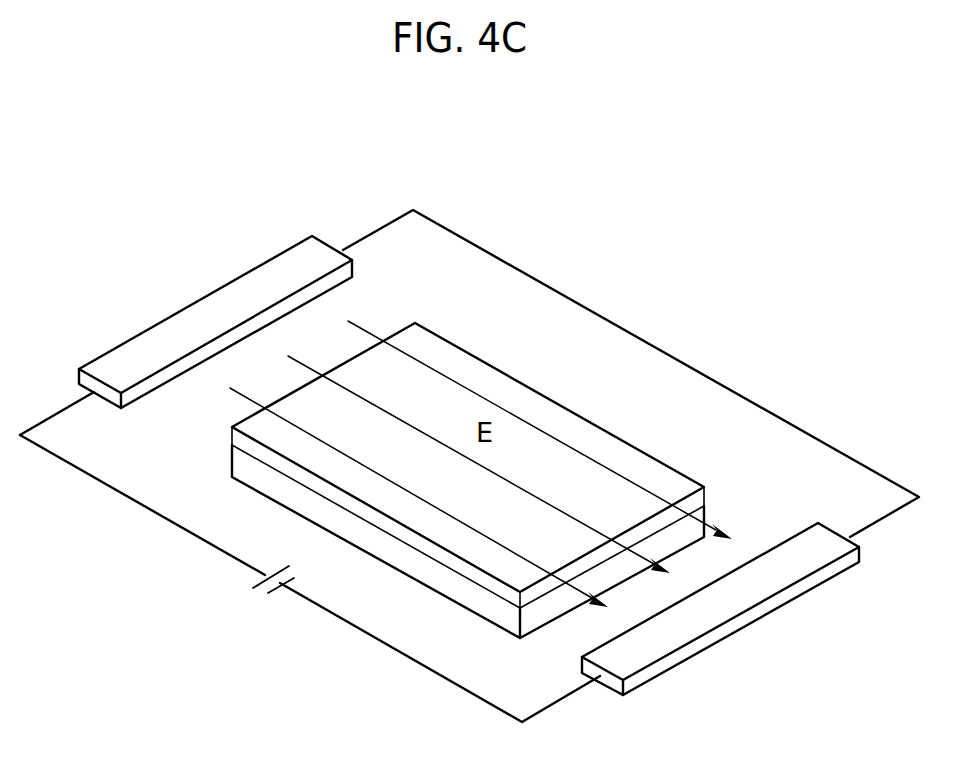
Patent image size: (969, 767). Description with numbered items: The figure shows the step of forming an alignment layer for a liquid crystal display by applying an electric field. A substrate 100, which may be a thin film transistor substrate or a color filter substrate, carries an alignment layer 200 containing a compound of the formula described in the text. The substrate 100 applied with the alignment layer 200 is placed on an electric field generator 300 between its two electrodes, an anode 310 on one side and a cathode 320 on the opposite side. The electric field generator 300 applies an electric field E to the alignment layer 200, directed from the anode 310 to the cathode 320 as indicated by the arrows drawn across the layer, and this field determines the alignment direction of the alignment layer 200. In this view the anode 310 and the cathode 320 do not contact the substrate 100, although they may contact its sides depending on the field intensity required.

The substrate 100 is at (240, 470).
The alignment layer 200 is at (240, 438).
The electric field generator 300 is at (257, 614).
The anode 310 is at (177, 322).
The cathode 320 is at (763, 608).